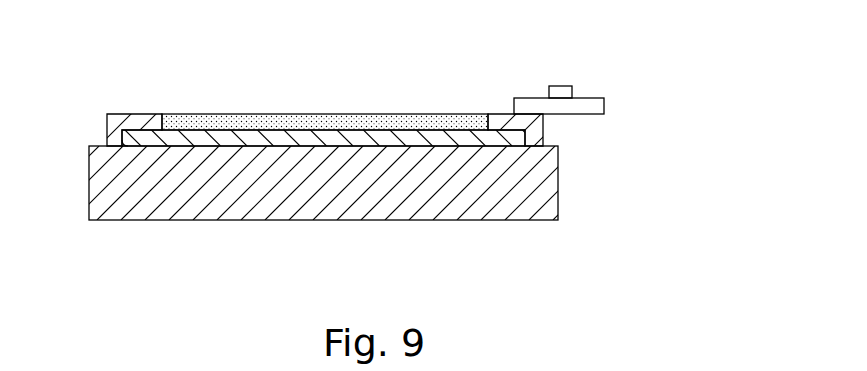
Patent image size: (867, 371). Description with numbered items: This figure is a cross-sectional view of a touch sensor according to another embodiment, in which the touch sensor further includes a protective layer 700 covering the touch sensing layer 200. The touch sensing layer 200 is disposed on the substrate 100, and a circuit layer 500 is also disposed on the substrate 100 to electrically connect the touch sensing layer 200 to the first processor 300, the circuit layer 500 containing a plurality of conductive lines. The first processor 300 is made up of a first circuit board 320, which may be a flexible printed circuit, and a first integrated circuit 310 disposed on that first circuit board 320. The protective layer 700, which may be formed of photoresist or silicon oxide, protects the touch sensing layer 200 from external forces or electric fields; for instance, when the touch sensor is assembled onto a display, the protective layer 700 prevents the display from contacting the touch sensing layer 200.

The substrate 100 is at (337, 221).
The touch sensing layer 200 is at (310, 128).
The protective layer 700 is at (413, 114).
The circuit layer 500 is at (135, 113).
The first processor 300 is at (637, 80).
The first integrated circuit 310 is at (622, 59).
The first circuit board 320 is at (605, 106).